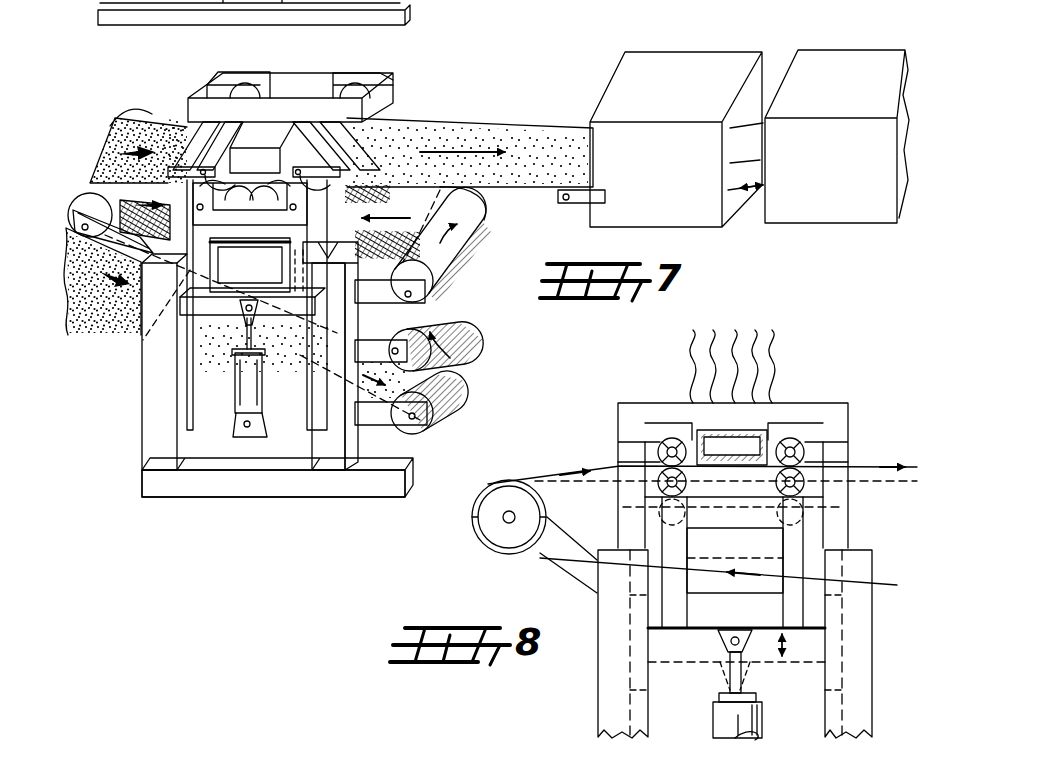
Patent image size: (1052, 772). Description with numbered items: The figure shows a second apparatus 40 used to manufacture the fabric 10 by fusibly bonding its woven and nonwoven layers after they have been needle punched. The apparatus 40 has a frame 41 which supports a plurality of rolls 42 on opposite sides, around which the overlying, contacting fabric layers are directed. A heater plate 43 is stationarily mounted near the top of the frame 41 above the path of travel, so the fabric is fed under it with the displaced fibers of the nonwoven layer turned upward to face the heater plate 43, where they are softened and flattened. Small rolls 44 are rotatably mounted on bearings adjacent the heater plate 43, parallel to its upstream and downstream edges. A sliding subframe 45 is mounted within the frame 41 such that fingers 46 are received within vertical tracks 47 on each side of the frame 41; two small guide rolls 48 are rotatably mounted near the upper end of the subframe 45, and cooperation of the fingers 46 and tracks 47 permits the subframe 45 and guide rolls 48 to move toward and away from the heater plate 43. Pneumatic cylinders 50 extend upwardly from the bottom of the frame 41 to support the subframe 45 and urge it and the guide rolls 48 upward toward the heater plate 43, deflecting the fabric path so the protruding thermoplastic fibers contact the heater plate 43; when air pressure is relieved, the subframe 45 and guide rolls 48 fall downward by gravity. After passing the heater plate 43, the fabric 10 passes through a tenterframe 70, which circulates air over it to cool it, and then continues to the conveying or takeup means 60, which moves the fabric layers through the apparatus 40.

In FIG. 7, the fabric 10 is at (535, 126).
In FIG. 8, the fabric 10 is at (603, 462).
In FIG. 7, the second apparatus 40 is at (133, 363).
In FIG. 7, the frame 41 is at (329, 457).
In FIG. 8, the frame 41 is at (598, 667).
In FIG. 7, the rolls 42 is at (78, 180).
In FIG. 8, the rolls 42 is at (486, 545).
In FIG. 7, the heater plate 43 is at (260, 143).
In FIG. 8, the heater plate 43 is at (735, 447).
In FIG. 7, the small rolls 44 is at (245, 74).
In FIG. 8, the small rolls 44 is at (670, 437).
In FIG. 7, the sliding subframe 45 is at (264, 294).
In FIG. 8, the sliding subframe 45 is at (752, 624).
In FIG. 7, the fingers 46 is at (187, 310).
In FIG. 8, the fingers 46 is at (632, 608).
In FIG. 7, the vertical tracks 47 is at (205, 393).
In FIG. 8, the vertical tracks 47 is at (635, 688).
In FIG. 7, the guide rolls 48 is at (250, 202).
In FIG. 8, the guide rolls 48 is at (662, 487).
In FIG. 7, the pneumatic cylinders 50 is at (238, 390).
In FIG. 8, the pneumatic cylinders 50 is at (713, 720).
In FIG. 7, the conveying or takeup means 60 is at (855, 60).
In FIG. 7, the tenterframe 70 is at (695, 60).